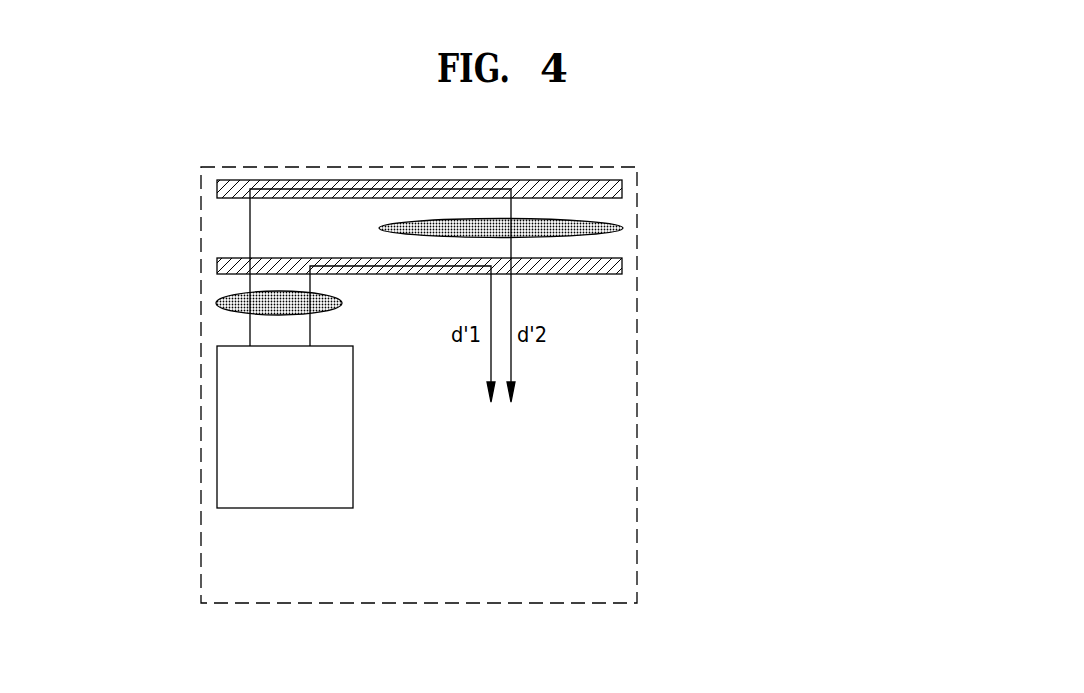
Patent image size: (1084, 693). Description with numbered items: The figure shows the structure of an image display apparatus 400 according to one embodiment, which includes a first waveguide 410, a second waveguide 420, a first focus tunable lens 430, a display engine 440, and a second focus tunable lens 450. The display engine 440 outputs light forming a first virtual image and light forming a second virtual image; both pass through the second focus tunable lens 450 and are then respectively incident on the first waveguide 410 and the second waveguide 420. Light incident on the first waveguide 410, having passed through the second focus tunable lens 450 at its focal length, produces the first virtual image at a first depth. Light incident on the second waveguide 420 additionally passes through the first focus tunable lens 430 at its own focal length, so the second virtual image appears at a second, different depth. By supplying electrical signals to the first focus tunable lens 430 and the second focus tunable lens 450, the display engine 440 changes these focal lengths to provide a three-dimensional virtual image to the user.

The image display apparatus 400 is at (585, 165).
The first waveguide 410 is at (622, 266).
The second waveguide 420 is at (622, 188).
The first focus tunable lens 430 is at (623, 228).
The display engine 440 is at (285, 427).
The second focus tunable lens 450 is at (216, 303).